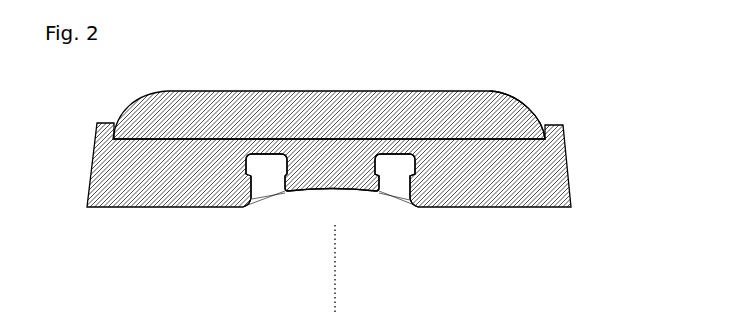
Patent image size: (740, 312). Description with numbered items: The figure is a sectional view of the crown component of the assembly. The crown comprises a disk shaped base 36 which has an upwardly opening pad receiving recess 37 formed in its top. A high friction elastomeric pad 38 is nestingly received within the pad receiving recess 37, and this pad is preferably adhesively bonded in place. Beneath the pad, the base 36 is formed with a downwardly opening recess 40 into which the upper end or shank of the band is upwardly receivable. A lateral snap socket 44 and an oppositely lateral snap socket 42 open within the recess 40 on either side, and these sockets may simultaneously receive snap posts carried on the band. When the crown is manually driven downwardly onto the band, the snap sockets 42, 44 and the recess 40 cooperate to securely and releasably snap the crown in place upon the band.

The base 36 is at (535, 176).
The pad receiving recess 37 is at (513, 139).
The high friction elastomeric pad 38 is at (335, 108).
The recess 40 is at (304, 203).
The oppositely lateral snap socket 42 is at (400, 162).
The lateral snap socket 44 is at (255, 163).